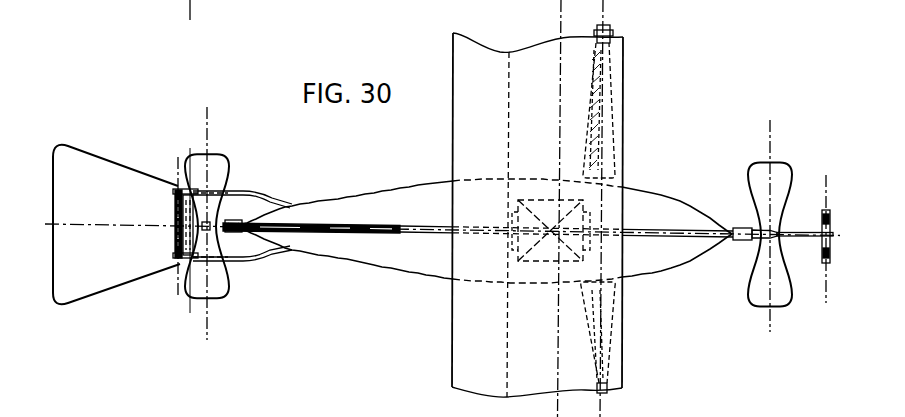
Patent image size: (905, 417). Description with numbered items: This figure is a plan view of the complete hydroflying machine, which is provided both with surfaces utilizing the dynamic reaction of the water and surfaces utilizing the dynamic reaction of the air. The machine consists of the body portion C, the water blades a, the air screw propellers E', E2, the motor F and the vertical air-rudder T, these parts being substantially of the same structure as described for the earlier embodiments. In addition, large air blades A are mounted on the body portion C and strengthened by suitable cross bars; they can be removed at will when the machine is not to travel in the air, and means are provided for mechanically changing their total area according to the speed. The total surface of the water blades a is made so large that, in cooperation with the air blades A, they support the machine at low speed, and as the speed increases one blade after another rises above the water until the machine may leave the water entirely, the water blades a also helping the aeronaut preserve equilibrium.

The vertical air-rudder T is at (443, 224).
The water blades a is at (178, 262).
The air screw propeller E' is at (238, 223).
The air screw propeller E2 is at (759, 226).
The body portion C is at (485, 231).
The air blades A is at (537, 208).
The motor F is at (551, 219).